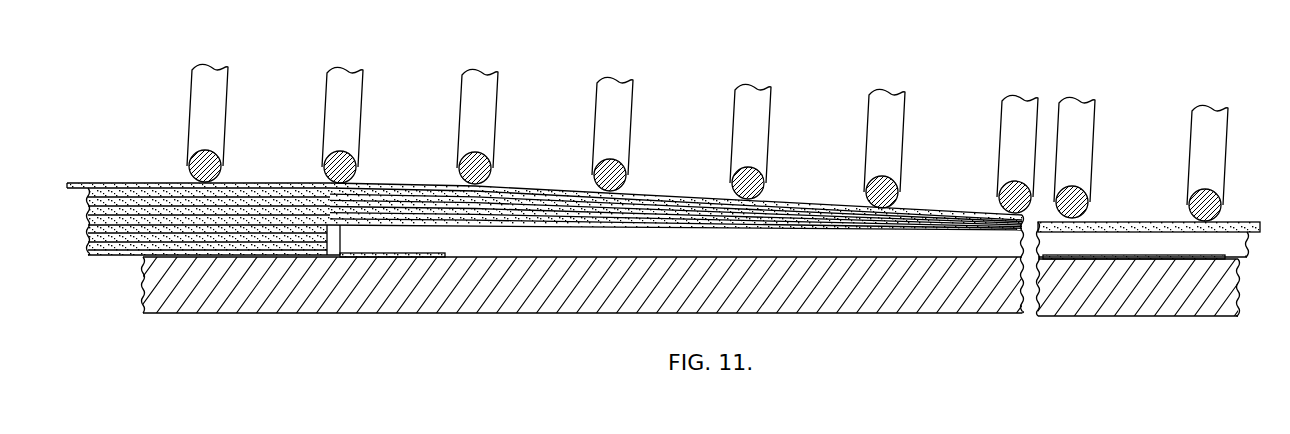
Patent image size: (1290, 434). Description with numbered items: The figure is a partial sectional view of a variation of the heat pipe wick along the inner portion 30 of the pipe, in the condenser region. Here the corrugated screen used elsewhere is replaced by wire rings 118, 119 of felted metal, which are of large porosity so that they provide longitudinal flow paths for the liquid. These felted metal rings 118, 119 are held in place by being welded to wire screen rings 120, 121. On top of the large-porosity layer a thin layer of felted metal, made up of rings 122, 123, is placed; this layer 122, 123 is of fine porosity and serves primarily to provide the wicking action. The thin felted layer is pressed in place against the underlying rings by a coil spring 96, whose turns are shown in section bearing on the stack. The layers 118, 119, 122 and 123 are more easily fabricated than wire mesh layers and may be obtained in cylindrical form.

The inner portion 30 is at (421, 304).
The coil spring 96 is at (773, 131).
The wire ring of felted metal 118 is at (607, 242).
The wire ring of felted metal 119 is at (1117, 247).
The wire screen ring 120 is at (445, 256).
The wire screen ring 121 is at (1163, 258).
The felted metal ring 122 is at (370, 226).
The felted metal ring 123 is at (1245, 223).